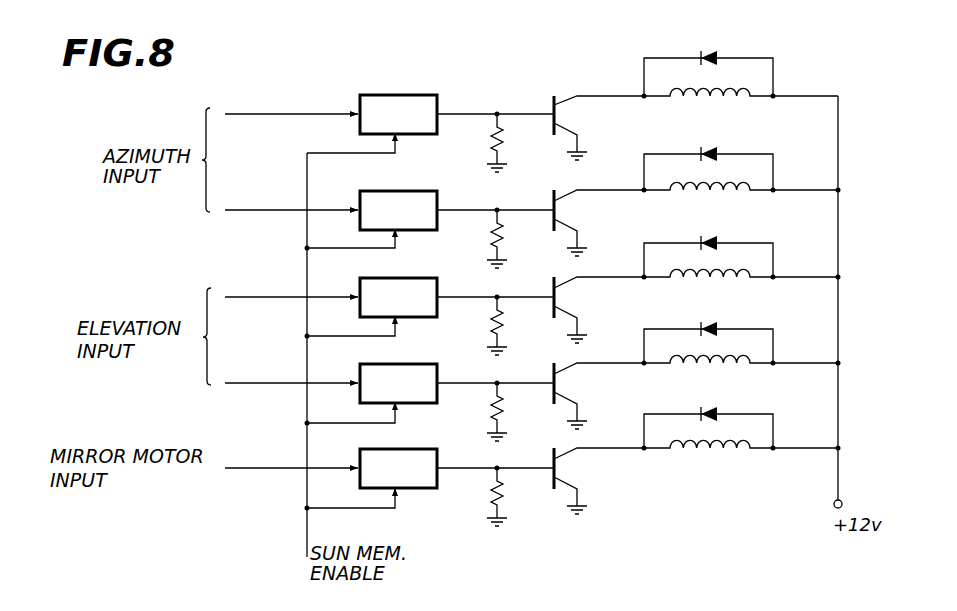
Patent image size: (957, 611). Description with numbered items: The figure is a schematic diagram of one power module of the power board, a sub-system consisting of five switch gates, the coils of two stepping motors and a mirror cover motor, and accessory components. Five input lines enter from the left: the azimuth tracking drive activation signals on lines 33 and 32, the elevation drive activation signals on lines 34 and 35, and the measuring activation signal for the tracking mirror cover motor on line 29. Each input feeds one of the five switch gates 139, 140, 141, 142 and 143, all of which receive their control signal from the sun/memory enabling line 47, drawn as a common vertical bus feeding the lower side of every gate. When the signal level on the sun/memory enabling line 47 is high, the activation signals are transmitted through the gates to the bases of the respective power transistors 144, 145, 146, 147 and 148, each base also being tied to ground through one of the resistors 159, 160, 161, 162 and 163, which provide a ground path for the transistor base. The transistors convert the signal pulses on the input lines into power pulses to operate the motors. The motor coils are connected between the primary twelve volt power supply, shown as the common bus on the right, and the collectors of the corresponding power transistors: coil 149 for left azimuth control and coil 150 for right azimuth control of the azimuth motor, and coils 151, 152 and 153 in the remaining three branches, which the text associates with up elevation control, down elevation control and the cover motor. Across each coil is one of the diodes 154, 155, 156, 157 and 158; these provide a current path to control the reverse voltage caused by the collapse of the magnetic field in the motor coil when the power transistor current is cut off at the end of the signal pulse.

The mirror motor input line 29 is at (240, 467).
The azimuth drive activation line 32 is at (257, 210).
The azimuth drive activation line 33 is at (278, 113).
The elevation drive activation line 34 is at (247, 296).
The elevation drive activation line 35 is at (249, 382).
The sun/memory enabling line 47 is at (307, 532).
The switch gate 139 is at (402, 94).
The switch gate 140 is at (418, 190).
The switch gate 141 is at (418, 277).
The switch gate 142 is at (423, 363).
The switch gate 143 is at (418, 448).
The power transistor 144 is at (567, 95).
The power transistor 145 is at (567, 189).
The power transistor 146 is at (567, 276).
The power transistor 147 is at (567, 362).
The power transistor 148 is at (570, 447).
The left azimuth control coil 149 is at (735, 99).
The right azimuth control coil 150 is at (735, 193).
The motor coil 151 is at (735, 280).
The motor coil 152 is at (725, 366).
The motor coil 153 is at (727, 451).
The diode 154 is at (710, 50).
The diode 155 is at (710, 146).
The diode 156 is at (710, 235).
The diode 157 is at (710, 321).
The diode 158 is at (710, 406).
The resistor 159 is at (505, 135).
The resistor 160 is at (505, 235).
The resistor 161 is at (505, 317).
The resistor 162 is at (505, 402).
The resistor 163 is at (507, 487).